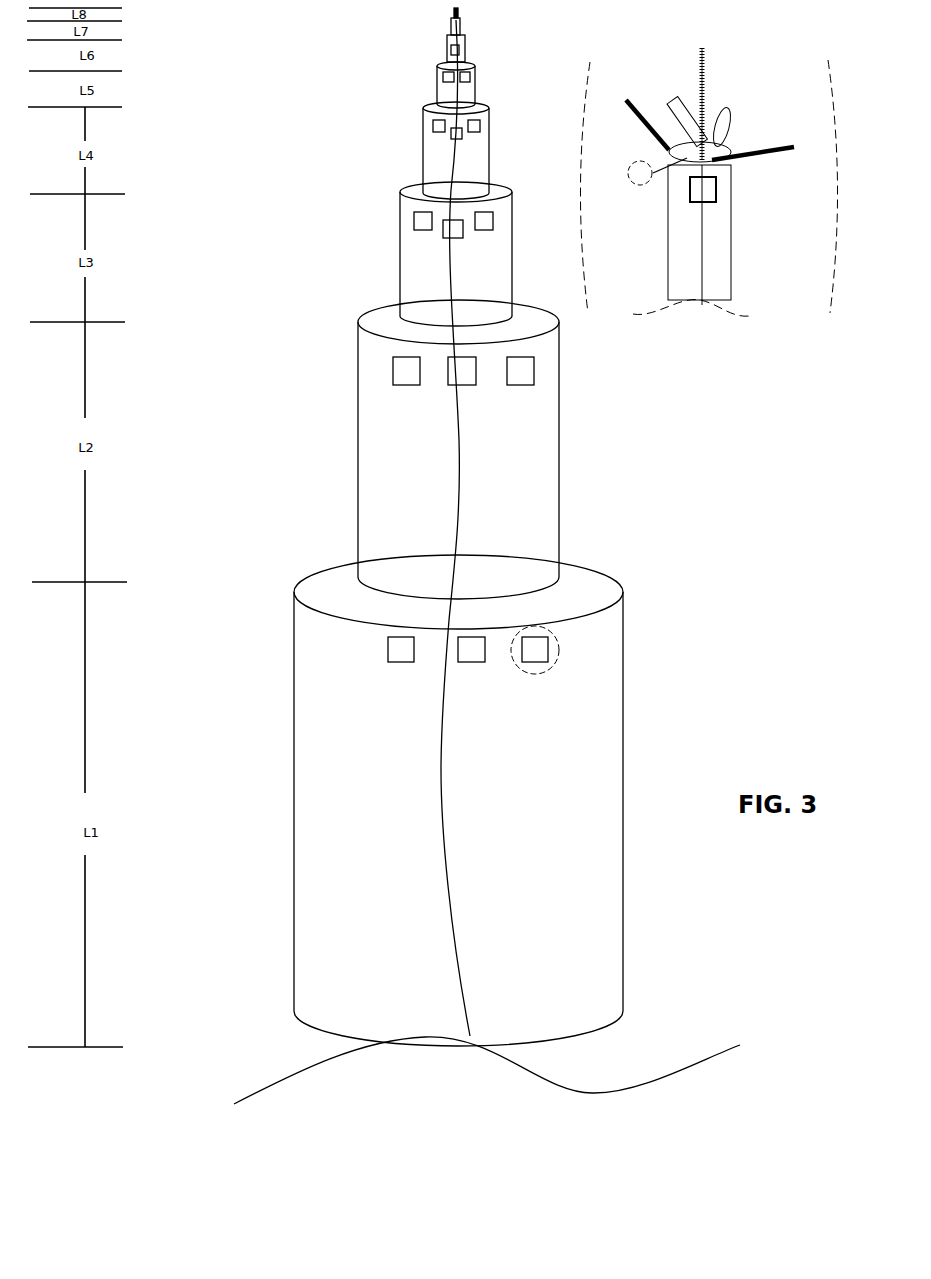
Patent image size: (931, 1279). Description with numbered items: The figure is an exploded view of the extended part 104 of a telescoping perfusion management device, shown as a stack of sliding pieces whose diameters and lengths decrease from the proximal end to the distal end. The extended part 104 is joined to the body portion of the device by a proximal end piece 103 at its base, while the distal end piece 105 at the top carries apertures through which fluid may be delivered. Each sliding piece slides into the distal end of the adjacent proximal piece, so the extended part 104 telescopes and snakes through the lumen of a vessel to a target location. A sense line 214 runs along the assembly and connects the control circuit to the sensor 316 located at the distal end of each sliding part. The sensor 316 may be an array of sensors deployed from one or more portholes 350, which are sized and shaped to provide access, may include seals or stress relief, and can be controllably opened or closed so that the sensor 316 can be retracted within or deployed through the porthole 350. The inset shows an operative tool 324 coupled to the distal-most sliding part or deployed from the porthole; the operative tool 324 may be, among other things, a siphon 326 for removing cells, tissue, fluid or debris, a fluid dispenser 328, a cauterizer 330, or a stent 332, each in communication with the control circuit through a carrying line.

The proximal end piece 103 is at (295, 868).
The extended part 104 is at (534, 524).
The distal end piece 105 is at (455, 15).
The sense line 214 is at (441, 765).
The sensor 316 is at (388, 645).
The porthole 350 is at (553, 670).
The operative tool 324 is at (710, 62).
The siphon 326 is at (670, 110).
The fluid dispenser 328 is at (649, 187).
The cauterizer 330 is at (760, 174).
The stent 332 is at (730, 130).